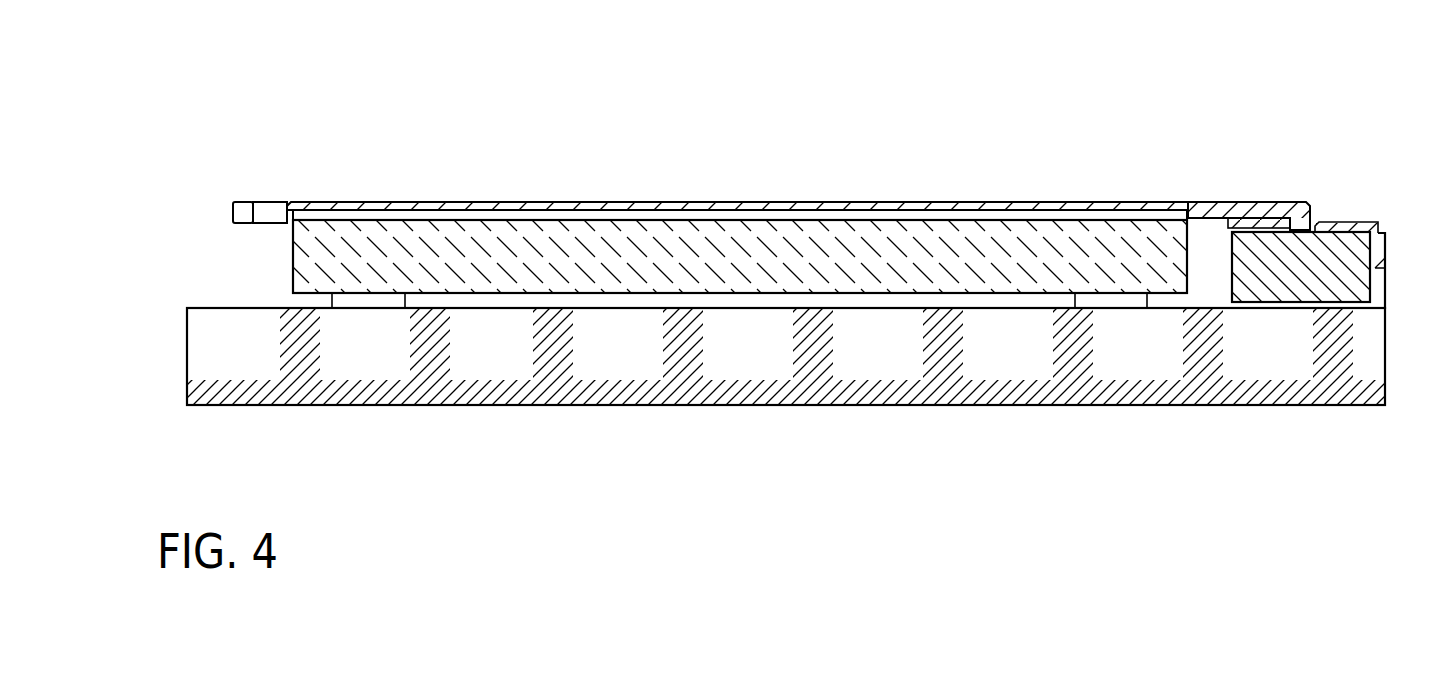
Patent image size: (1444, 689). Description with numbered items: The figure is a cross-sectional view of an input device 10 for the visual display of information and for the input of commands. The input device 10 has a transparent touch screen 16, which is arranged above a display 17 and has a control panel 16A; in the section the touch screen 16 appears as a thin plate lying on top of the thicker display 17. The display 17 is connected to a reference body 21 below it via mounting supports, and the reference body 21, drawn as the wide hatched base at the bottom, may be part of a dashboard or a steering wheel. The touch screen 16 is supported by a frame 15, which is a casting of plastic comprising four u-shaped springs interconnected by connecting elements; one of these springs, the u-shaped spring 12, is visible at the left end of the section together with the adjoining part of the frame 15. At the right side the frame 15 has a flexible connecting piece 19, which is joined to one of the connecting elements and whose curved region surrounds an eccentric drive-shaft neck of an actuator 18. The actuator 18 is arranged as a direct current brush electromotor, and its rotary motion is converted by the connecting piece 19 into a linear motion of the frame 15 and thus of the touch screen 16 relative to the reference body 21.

The input device 10 is at (1128, 151).
The u-shaped spring 12 is at (241, 212).
The frame 15 is at (270, 212).
The transparent touch screen 16 is at (630, 204).
The control panel 16A is at (742, 200).
The display 17 is at (409, 250).
The actuator 18 is at (1343, 252).
The connecting piece 19 is at (1247, 210).
The reference body 21 is at (1021, 370).